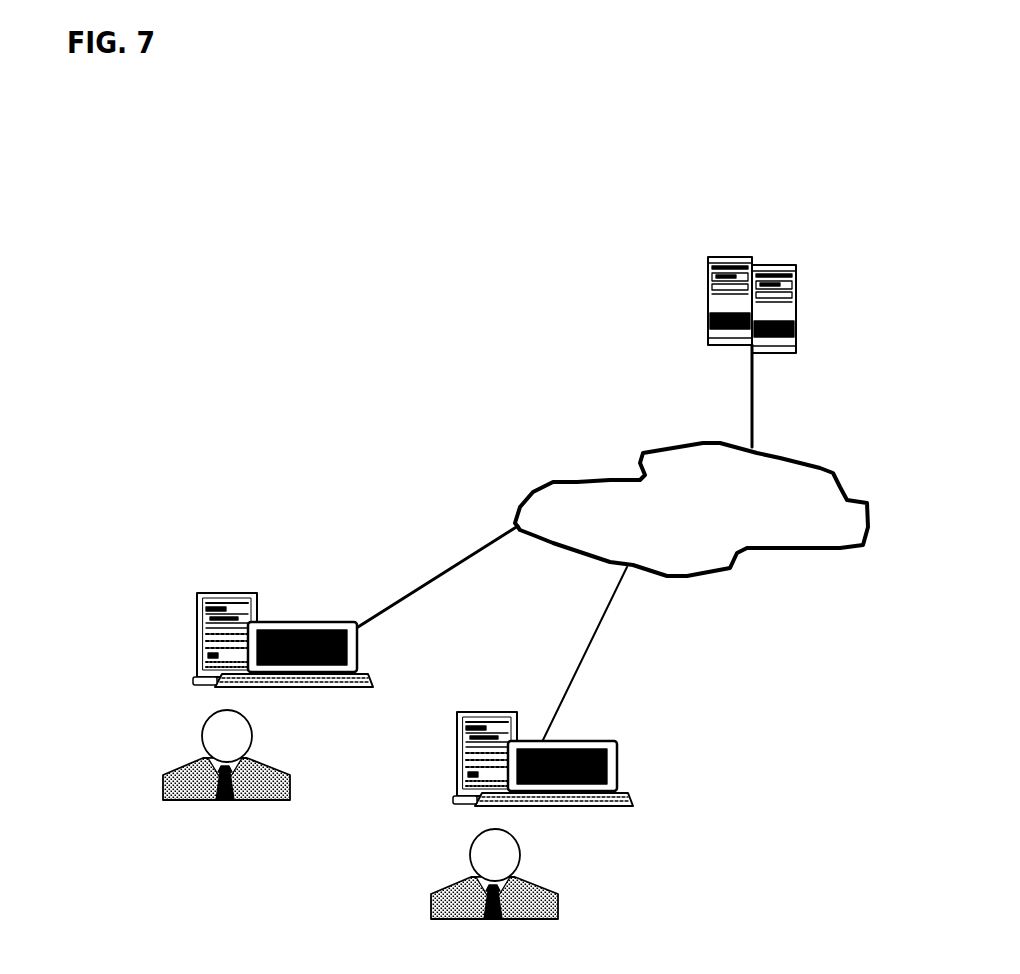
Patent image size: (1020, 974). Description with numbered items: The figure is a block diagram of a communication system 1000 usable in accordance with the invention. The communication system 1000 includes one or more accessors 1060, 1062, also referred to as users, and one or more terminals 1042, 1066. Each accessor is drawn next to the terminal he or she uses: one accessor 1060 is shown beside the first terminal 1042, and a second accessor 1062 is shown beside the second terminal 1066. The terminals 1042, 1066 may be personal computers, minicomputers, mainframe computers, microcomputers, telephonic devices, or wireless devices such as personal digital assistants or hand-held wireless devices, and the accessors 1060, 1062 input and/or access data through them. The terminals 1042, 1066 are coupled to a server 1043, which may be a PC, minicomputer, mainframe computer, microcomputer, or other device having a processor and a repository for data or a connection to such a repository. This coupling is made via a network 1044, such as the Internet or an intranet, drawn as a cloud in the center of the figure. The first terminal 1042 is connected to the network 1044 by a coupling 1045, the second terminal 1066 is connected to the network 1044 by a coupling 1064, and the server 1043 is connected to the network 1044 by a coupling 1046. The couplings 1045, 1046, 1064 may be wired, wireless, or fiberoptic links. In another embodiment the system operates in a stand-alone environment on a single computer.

The communication system 1000 is at (310, 288).
The terminal 1042 is at (199, 594).
The server 1043 is at (790, 265).
The network 1044 is at (646, 470).
The coupling 1045 is at (440, 576).
The coupling 1046 is at (745, 385).
The accessor 1060 is at (182, 760).
The accessor 1062 is at (562, 900).
The coupling 1064 is at (592, 640).
The terminal 1066 is at (614, 765).